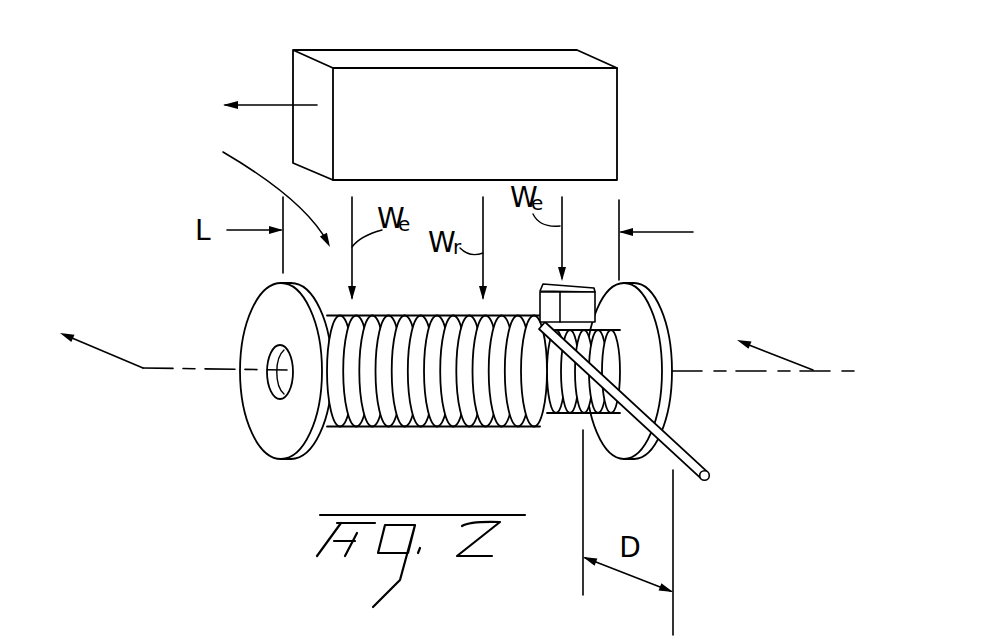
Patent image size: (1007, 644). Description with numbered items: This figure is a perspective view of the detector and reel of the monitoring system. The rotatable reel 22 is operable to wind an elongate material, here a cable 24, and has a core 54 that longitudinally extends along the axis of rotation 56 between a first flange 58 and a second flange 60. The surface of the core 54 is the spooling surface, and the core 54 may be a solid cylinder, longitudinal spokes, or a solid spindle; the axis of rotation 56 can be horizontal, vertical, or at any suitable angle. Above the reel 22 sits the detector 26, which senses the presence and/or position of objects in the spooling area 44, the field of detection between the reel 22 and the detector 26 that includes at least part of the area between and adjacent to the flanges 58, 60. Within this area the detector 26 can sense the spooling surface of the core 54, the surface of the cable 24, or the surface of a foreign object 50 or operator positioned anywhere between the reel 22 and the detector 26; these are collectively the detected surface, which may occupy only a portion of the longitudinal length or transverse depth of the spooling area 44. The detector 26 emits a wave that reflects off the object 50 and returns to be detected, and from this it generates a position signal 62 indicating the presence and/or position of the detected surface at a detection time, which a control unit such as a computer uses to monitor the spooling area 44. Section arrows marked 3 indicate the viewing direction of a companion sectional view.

The detector 26 is at (453, 153).
The position signal 62 is at (275, 102).
The spooling area 44 is at (256, 191).
The reel 22 is at (429, 394).
The first flange 58 is at (265, 313).
The second flange 60 is at (661, 308).
The core 54 is at (282, 378).
The object 50 is at (580, 303).
The cable 24 is at (688, 448).
The axis of rotation 56 is at (823, 372).
The section line of FIG. 3 is at (426, 344).